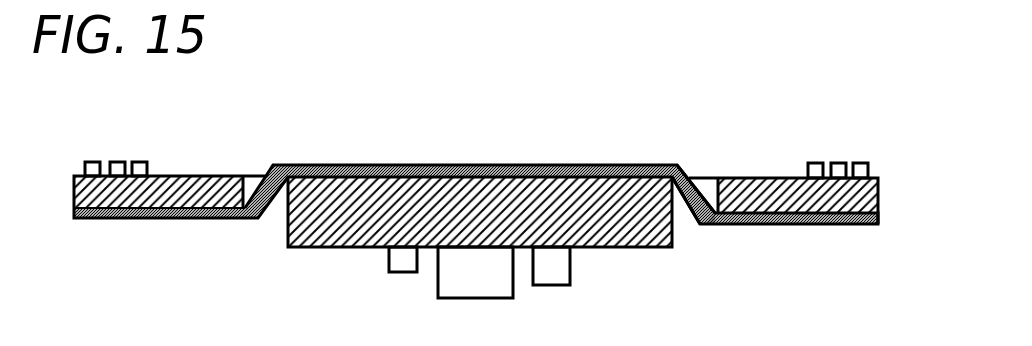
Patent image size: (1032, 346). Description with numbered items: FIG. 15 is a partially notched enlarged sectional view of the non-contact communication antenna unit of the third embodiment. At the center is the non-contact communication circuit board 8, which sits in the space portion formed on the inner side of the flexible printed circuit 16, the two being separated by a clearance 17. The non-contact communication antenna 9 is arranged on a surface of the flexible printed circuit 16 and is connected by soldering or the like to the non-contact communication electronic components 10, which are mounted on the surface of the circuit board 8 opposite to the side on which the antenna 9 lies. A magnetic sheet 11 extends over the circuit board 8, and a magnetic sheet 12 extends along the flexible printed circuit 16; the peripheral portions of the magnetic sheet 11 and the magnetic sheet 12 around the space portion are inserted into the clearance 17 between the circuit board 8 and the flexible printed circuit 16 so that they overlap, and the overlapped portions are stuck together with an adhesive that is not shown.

The non-contact communication circuit board 8 is at (353, 247).
The non-contact communication antenna 9 is at (838, 163).
The non-contact communication electronic components 10 is at (405, 272).
The magnetic sheet 11 is at (462, 165).
The magnetic sheet 12 is at (775, 227).
The flexible printed circuit 16 is at (882, 194).
The clearance 17 is at (712, 182).